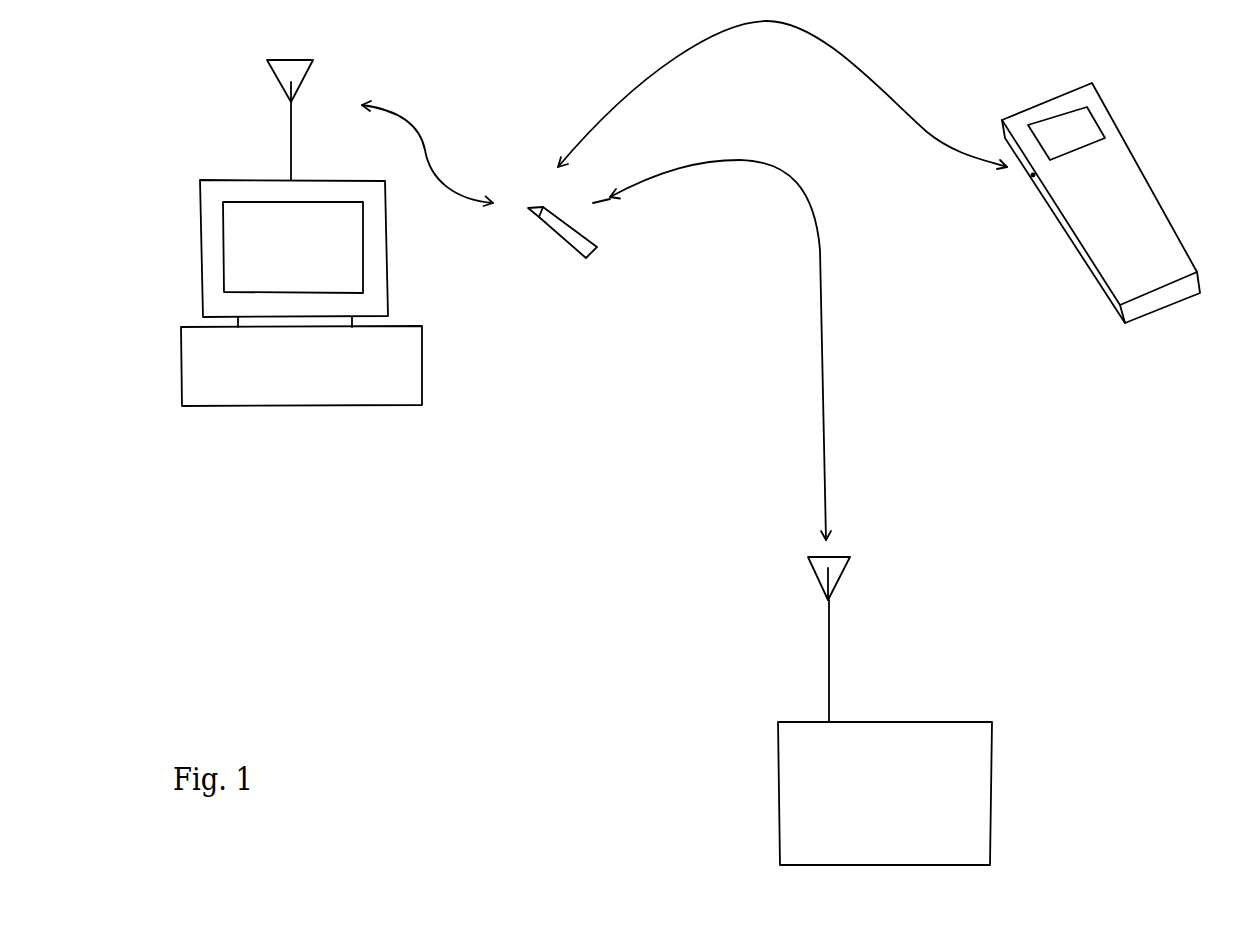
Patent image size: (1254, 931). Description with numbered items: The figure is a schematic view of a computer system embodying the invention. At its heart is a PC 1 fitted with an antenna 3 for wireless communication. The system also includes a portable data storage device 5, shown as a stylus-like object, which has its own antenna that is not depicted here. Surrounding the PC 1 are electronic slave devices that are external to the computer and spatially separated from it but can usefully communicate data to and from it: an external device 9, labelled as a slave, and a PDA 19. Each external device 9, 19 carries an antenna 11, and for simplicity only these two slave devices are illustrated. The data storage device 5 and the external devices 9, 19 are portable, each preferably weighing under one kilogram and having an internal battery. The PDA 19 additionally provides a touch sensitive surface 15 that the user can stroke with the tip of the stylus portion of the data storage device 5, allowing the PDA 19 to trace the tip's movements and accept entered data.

The PC 1 is at (198, 175).
The antenna 3 is at (278, 135).
The data storage device 5 is at (559, 257).
The external device 9 is at (997, 787).
The antenna 11 is at (1023, 182).
The touch sensitive surface 15 is at (1080, 128).
The PDA 19 is at (1163, 152).